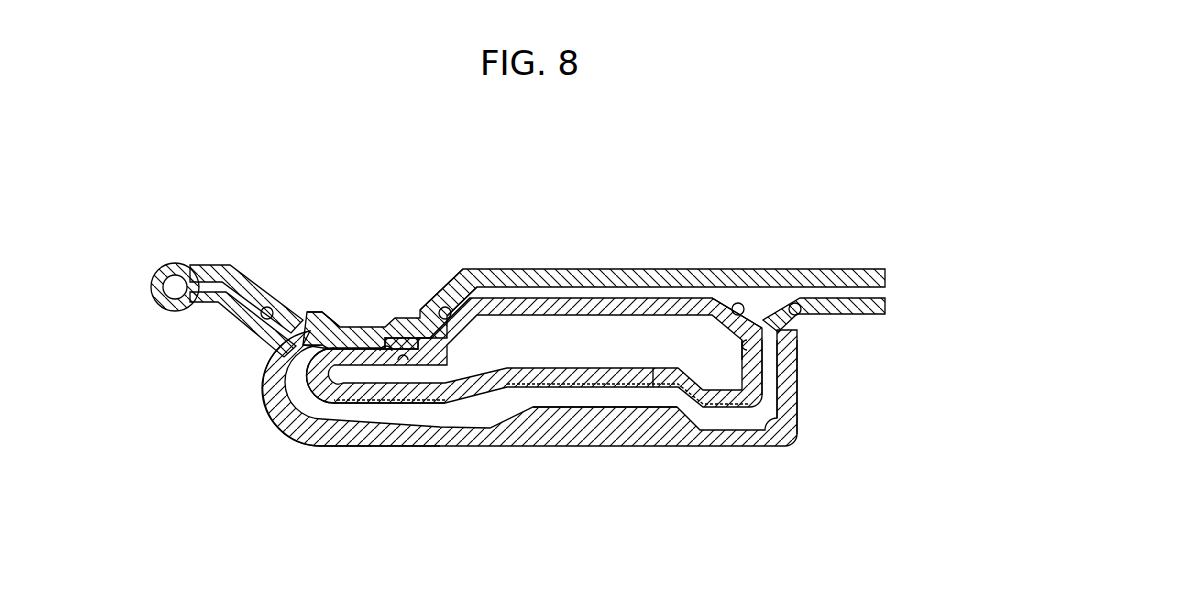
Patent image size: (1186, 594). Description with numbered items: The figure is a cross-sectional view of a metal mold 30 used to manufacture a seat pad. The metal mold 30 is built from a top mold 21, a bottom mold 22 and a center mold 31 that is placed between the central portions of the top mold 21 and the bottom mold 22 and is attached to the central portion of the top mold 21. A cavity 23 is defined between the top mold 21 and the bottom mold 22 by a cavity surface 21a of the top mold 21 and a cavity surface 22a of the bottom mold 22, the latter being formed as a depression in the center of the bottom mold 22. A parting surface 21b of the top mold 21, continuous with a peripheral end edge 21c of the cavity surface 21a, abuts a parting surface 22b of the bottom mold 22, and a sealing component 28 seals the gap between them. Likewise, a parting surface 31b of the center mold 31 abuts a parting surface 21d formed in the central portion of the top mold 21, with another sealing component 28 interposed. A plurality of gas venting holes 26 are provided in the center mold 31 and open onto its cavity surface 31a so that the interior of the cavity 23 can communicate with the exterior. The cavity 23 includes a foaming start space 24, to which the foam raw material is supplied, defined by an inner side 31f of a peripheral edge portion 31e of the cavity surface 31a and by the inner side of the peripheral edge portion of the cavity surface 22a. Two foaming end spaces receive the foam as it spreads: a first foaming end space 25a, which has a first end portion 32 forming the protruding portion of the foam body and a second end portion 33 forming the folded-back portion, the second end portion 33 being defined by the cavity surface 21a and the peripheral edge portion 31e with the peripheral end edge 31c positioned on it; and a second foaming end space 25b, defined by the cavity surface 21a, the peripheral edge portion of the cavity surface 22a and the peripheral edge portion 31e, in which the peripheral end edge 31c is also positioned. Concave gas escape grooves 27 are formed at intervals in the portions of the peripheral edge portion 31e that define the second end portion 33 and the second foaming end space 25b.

The metal mold 30 is at (236, 156).
The top mold 21 is at (886, 276).
The cavity surface of the top mold 21a is at (357, 348).
The parting surface of the top mold 21b is at (273, 341).
The peripheral end edge of the cavity surface of the top mold 21c is at (310, 328).
The parting surface formed in a central portion of the top mold 21d is at (492, 290).
The bottom mold 22 is at (886, 308).
The cavity surface of the bottom mold 22a is at (443, 428).
The parting surface of the bottom mold 22b is at (257, 276).
The cavity 23 is at (589, 412).
The foaming start space 24 is at (352, 428).
The first foaming end space 25a is at (296, 506).
The second foaming end space 25b is at (781, 382).
The gas venting holes 26 is at (389, 350).
The concave gas escape grooves 27 is at (745, 348).
The sealing component 28 is at (446, 306).
The center mold 31 is at (582, 300).
The cavity surface of the center mold 31a is at (492, 404).
The parting surface of the center mold 31b is at (447, 302).
The peripheral end edge of the cavity surface of the center mold 31c is at (422, 337).
The peripheral edge portion of the cavity surface of the center mold 31e is at (758, 390).
The inner side of the peripheral edge portion of the center mold cavity surface 31f is at (396, 405).
The first end portion 32 is at (284, 393).
The second end portion 33 is at (339, 358).